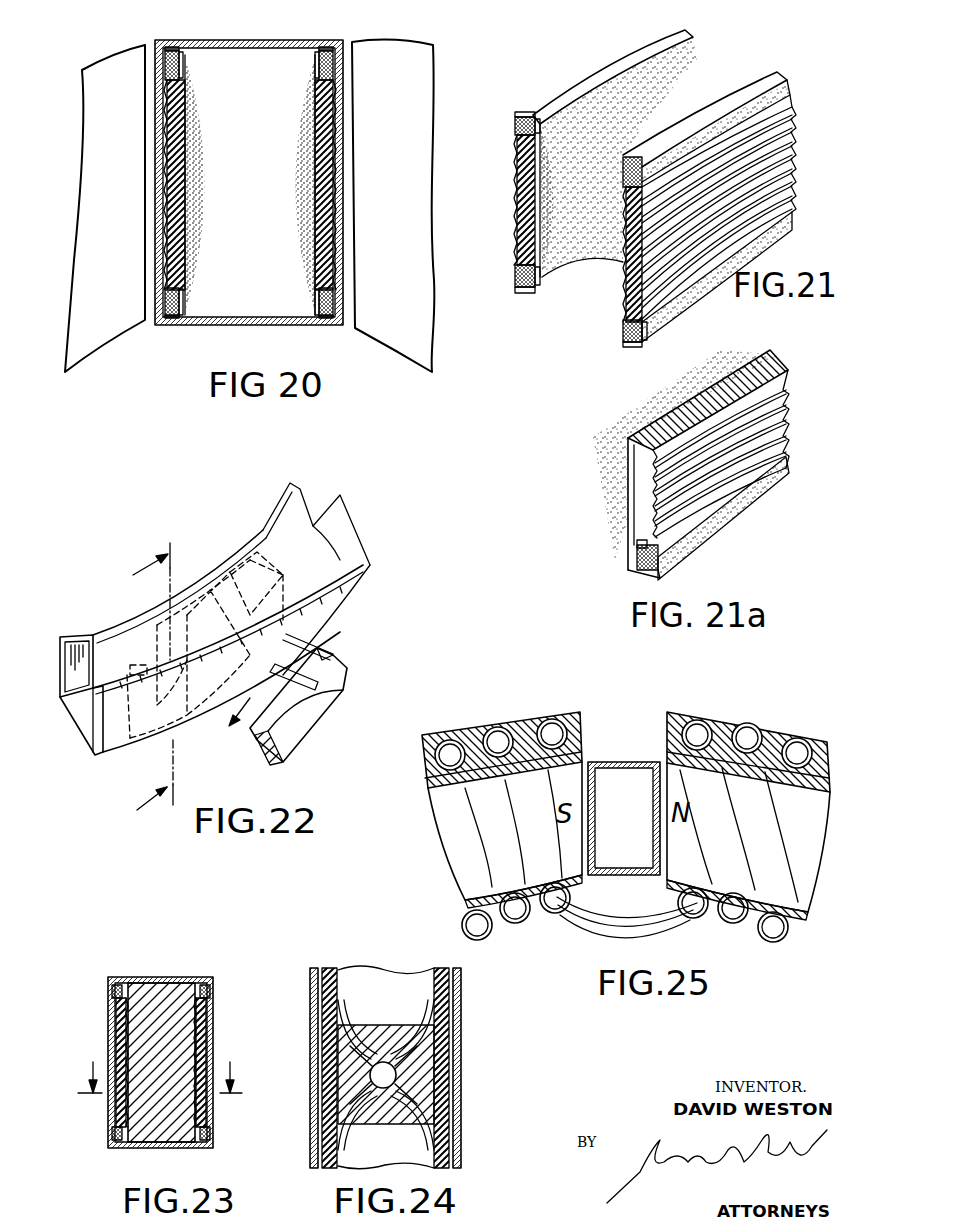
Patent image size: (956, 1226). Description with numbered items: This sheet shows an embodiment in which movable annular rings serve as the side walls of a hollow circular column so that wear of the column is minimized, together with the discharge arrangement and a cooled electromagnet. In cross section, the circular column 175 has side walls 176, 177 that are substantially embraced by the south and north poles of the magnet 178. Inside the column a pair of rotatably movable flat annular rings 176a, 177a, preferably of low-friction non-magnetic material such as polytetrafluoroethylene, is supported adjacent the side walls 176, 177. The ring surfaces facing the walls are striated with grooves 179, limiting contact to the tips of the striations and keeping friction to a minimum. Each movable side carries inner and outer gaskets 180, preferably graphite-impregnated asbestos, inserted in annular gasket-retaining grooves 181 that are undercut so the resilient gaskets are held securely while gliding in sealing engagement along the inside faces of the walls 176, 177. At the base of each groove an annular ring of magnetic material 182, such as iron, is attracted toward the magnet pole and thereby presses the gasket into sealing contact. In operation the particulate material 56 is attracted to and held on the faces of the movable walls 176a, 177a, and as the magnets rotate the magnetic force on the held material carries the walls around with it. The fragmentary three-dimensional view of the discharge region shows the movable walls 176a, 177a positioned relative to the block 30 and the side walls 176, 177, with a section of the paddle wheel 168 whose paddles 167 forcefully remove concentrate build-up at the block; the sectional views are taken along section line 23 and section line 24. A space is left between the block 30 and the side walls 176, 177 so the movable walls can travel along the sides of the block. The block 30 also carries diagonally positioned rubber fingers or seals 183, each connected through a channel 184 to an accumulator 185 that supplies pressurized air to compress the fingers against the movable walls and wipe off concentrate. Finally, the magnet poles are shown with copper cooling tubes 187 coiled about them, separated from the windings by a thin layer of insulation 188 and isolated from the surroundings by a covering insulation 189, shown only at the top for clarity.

In FIG. 22, the block 30 is at (172, 625).
In FIG. 23, the block 30 is at (163, 994).
In FIG. 24, the block 30 is at (378, 1030).
In FIG. 20, the particulate material 56 is at (287, 212).
In FIG. 21, the particulate material 56 is at (607, 213).
In FIG. 21A, the particulate material 56 is at (603, 458).
In FIG. 22, the paddles 167 is at (293, 640).
In FIG. 22, the paddle wheel 168 is at (332, 663).
In FIG. 20, the circular column 175 is at (268, 42).
In FIG. 20, the side wall 176 is at (160, 276).
In FIG. 22, the side wall 176 is at (60, 655).
In FIG. 23, the side wall 176 is at (113, 1122).
In FIG. 24, the side wall 176 is at (320, 997).
In FIG. 20, the movable annular ring 176a is at (178, 107).
In FIG. 21, the movable annular ring 176a is at (557, 100).
In FIG. 22, the movable annular ring 176a is at (98, 645).
In FIG. 23, the movable annular ring 176a is at (121, 1006).
In FIG. 24, the movable annular ring 176a is at (337, 988).
In FIG. 20, the side wall 177 is at (342, 274).
In FIG. 22, the side wall 177 is at (113, 723).
In FIG. 23, the side wall 177 is at (213, 1114).
In FIG. 24, the side wall 177 is at (462, 1117).
In FIG. 20, the movable annular ring 177a is at (327, 264).
In FIG. 21, the movable annular ring 177a is at (718, 92).
In FIG. 21A, the movable annular ring 177a is at (640, 497).
In FIG. 22, the movable annular ring 177a is at (228, 670).
In FIG. 23, the movable annular ring 177a is at (201, 1016).
In FIG. 24, the movable annular ring 177a is at (446, 985).
In FIG. 20, the magnet 178 is at (412, 338).
In FIG. 20, the grooves 179 is at (166, 132).
In FIG. 21, the grooves 179 is at (520, 215).
In FIG. 20, the gaskets 180 is at (170, 54).
In FIG. 21, the gaskets 180 is at (516, 124).
In FIG. 21A, the gaskets 180 is at (673, 552).
In FIG. 20, the gasket-retaining grooves 181 is at (324, 47).
In FIG. 21, the gasket-retaining grooves 181 is at (531, 114).
In FIG. 21A, the gasket-retaining grooves 181 is at (643, 572).
In FIG. 20, the annular ring of magnetic material 182 is at (181, 61).
In FIG. 21, the annular ring of magnetic material 182 is at (540, 128).
In FIG. 21A, the annular ring of magnetic material 182 is at (636, 552).
In FIG. 24, the fingers or seals 183 is at (343, 1017).
In FIG. 24, the channel 184 is at (408, 1058).
In FIG. 24, the accumulator 185 is at (397, 1077).
In FIG. 25, the copper cooling tubes 187 is at (489, 722).
In FIG. 25, the thin layer of insulation 188 is at (592, 760).
In FIG. 25, the covering insulation 189 is at (525, 718).
In FIG. 22, the section line 23— 23 is at (188, 688).
In FIG. 23, the section line 24— 24 is at (161, 1077).